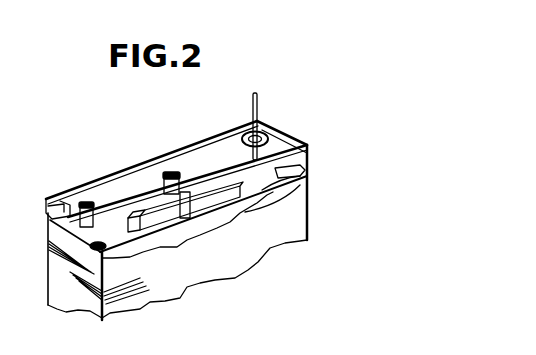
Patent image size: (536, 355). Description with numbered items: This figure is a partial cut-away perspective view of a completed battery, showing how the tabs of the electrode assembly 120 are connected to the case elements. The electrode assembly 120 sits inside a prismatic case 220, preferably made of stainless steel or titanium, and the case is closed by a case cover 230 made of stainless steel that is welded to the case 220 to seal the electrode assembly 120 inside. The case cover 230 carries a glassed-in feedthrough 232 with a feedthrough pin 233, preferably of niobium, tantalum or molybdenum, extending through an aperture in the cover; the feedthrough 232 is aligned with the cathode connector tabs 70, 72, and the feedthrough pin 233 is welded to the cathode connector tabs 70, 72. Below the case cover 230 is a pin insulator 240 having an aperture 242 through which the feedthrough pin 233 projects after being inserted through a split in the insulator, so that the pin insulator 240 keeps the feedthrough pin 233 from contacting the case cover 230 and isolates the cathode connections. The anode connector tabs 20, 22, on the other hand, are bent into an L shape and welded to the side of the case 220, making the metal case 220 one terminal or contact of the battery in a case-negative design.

The anode connector tab 20 is at (167, 170).
The anode connector tab 22 is at (91, 200).
The cathode connector tab 70 is at (221, 200).
The cathode connector tab 72 is at (185, 218).
The electrode assembly 120 is at (260, 213).
The prismatic case 220 is at (310, 197).
The case cover 230 is at (290, 133).
The feedthrough 232 is at (233, 130).
The feedthrough pin 233 is at (258, 106).
The pin insulator 240 is at (77, 242).
The aperture 242 is at (305, 172).